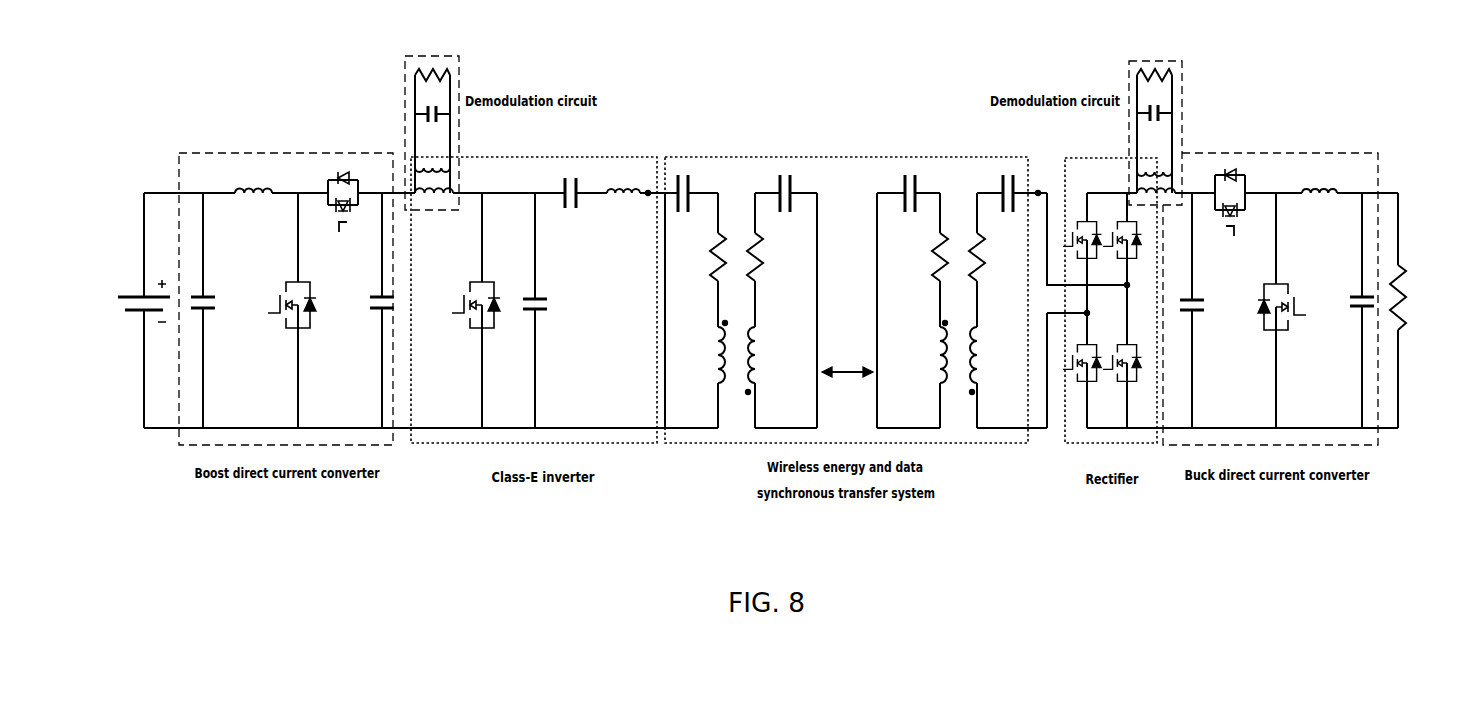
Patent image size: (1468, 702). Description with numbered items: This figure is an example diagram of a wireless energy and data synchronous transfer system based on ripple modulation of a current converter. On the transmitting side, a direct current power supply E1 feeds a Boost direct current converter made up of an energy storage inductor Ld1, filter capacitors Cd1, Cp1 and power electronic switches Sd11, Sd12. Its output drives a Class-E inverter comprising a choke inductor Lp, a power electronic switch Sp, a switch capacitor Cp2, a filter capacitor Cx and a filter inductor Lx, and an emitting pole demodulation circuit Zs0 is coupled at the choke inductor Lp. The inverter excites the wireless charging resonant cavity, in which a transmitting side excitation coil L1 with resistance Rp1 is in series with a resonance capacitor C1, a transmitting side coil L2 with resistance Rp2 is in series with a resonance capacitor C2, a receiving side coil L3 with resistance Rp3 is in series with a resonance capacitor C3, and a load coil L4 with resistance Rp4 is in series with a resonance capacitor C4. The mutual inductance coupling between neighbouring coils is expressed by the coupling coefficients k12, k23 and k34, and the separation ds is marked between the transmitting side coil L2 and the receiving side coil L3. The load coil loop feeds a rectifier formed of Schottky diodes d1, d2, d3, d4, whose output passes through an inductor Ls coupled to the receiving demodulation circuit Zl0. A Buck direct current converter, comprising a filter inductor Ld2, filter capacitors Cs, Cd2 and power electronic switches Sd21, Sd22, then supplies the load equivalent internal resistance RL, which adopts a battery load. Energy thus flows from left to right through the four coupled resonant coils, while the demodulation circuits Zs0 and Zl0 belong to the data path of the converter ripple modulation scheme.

The DC voltage source E1 is at (128, 310).
The filter capacitor Cd1 is at (222, 310).
The energy storage inductor Ld1 is at (253, 217).
The power electronic switch Sd11 is at (305, 310).
The power electronic switch Sd12 is at (347, 221).
The filter capacitor Cp1 is at (400, 310).
The choke inductor Lp is at (436, 209).
The transmitter-side demodulation circuit impedance Zs0 is at (432, 113).
The class-E inverter switch Sp is at (473, 310).
The switch capacitor Cp2 is at (554, 310).
The filter capacitor Cx is at (571, 217).
The filter inductor Lx is at (624, 222).
The resonance capacitor C1 is at (685, 214).
The resistance parameter of transmitting side excitation coil Rp1 is at (705, 259).
The transmitting side excitation coil L1 is at (711, 352).
The resonance capacitor C2 is at (794, 214).
The resistance parameter of transmitting side coil Rp2 is at (770, 261).
The transmitting side coil L2 is at (765, 361).
The mutual inductance coupling coefficient k12 is at (739, 416).
The transfer distance ds is at (847, 352).
The mutual inductance coupling coefficient k23 is at (847, 416).
The resonance capacitor C3 is at (901, 214).
The resistance parameter of receiving side coil Rp3 is at (926, 260).
The receiving side coil L3 is at (930, 352).
The mutual inductance coupling coefficient k34 is at (962, 416).
The resonance capacitor C4 is at (1013, 214).
The resistance parameter of load coil Rp4 is at (992, 260).
The load coil L4 is at (999, 361).
The Schottky diode d1 is at (1087, 269).
The Schottky diode d2 is at (1126, 269).
The Schottky diode d3 is at (1088, 386).
The Schottky diode d4 is at (1127, 386).
The receiver-side demodulation circuit impedance Zl0 is at (1155, 112).
The receiver-side inductor Ls is at (1156, 190).
The filter capacitor Cs is at (1205, 310).
The power electronic switch Sd22 is at (1231, 224).
The power electronic switch Sd21 is at (1291, 310).
The filter inductor Ld2 is at (1319, 219).
The filter capacitor Cd2 is at (1343, 310).
The load equivalent internal resistance RL is at (1417, 310).